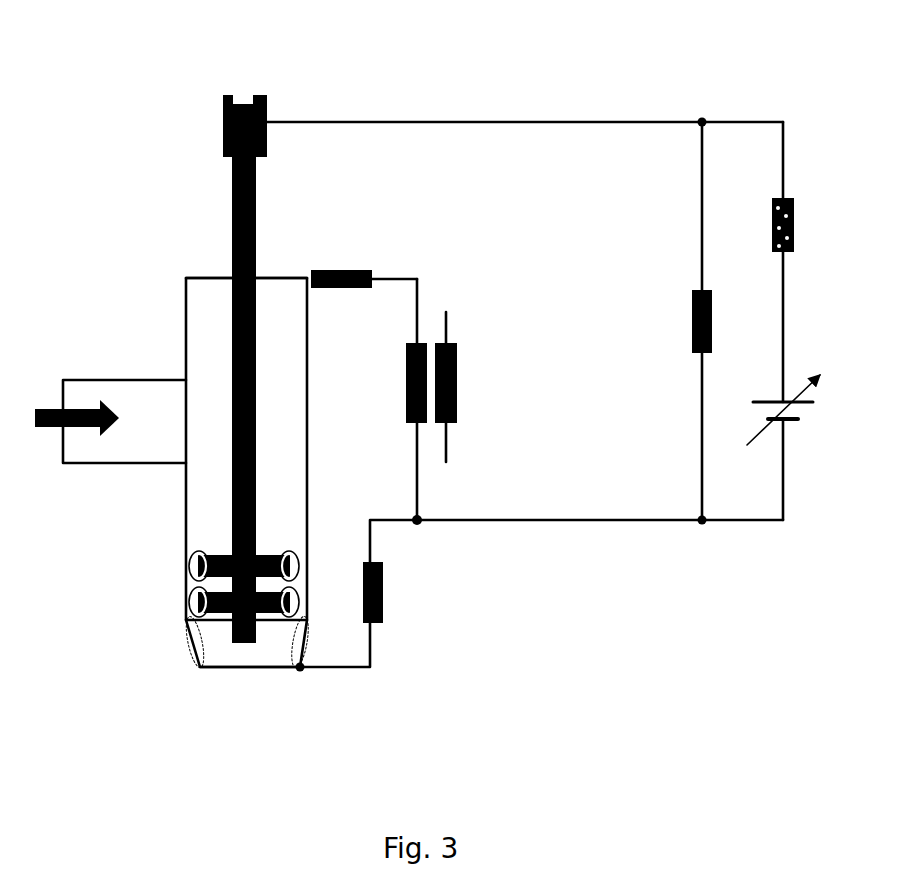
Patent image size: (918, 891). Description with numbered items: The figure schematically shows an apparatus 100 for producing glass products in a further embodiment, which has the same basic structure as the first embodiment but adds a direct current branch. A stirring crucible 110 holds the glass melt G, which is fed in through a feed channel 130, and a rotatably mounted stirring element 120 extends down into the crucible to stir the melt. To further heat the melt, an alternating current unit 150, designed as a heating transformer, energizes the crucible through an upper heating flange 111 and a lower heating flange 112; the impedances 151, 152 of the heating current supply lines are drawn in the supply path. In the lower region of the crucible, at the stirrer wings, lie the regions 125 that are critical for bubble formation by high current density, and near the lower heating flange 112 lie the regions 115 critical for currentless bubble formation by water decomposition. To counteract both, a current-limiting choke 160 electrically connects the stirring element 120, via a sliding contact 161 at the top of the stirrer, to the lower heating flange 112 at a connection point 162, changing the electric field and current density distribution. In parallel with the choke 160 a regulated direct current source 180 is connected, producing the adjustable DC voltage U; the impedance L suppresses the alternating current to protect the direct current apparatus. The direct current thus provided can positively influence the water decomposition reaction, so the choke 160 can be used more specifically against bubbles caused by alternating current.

The apparatus for producing glass products 100 is at (147, 72).
The stirring crucible 110 is at (186, 328).
The upper heating flange 111 is at (213, 279).
The lower heating flange 112 is at (210, 675).
The region of possible bubble formation by water decomposition 115 is at (182, 650).
The stirring element 120 is at (257, 228).
The region of possible bubble formation due to heating by alternating current 125 is at (188, 584).
The feed channel 130 is at (110, 468).
The alternating current unit 150 is at (466, 470).
The impedance of heating current supply line 151 is at (357, 260).
The impedance of heating current supply line 152 is at (384, 590).
The current-limiting choke 160 is at (692, 330).
The sliding contact 161 is at (268, 108).
The connection point 162 is at (424, 526).
The regulated direct current source 180 is at (820, 533).
The impedance L is at (795, 225).
The adjustable DC voltage U is at (806, 410).
The glass melt G is at (141, 423).